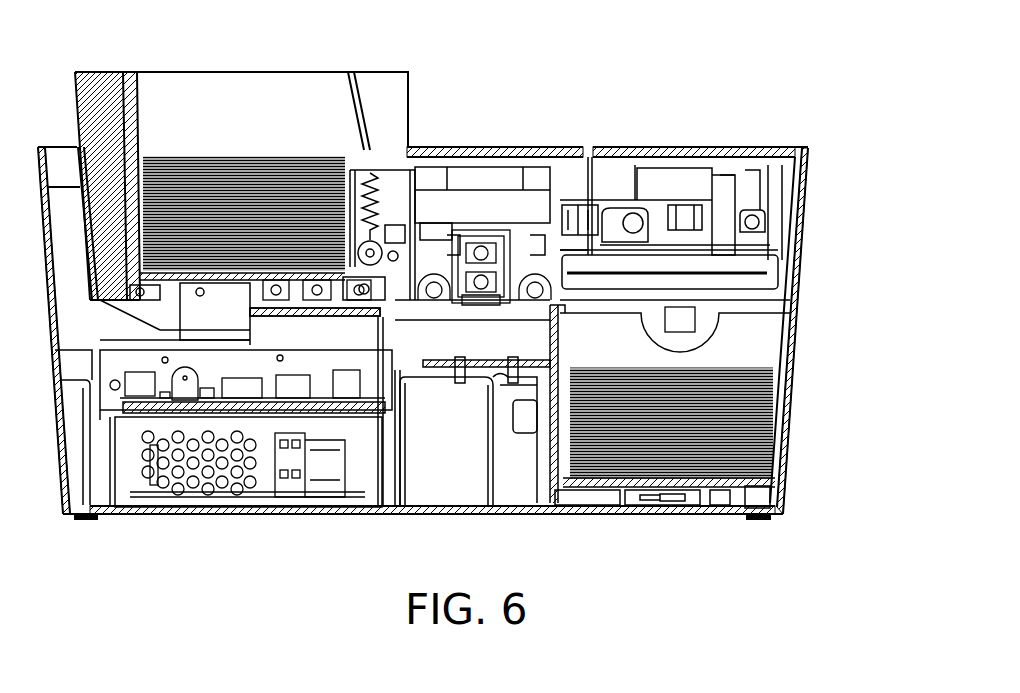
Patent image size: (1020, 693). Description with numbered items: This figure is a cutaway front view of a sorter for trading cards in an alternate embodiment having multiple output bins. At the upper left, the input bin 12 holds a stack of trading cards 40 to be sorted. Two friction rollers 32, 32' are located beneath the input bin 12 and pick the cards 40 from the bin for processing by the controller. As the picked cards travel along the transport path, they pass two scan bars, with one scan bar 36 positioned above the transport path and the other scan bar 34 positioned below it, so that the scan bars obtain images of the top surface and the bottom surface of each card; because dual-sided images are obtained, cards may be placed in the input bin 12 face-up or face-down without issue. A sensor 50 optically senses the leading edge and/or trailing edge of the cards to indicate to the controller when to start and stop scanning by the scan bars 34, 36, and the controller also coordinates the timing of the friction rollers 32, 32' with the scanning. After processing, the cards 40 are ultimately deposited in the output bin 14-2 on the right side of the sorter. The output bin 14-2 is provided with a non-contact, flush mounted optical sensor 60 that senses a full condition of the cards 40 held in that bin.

The input bin 12 is at (303, 80).
The trading cards 40 is at (343, 143).
The scan bar 36 is at (483, 243).
The optical sensor 60 is at (697, 310).
The output bin 14-2 is at (773, 338).
The friction roller 32 is at (249, 410).
The friction roller 32' is at (311, 410).
The sensor 50 is at (447, 305).
The scan bar 34 is at (487, 300).